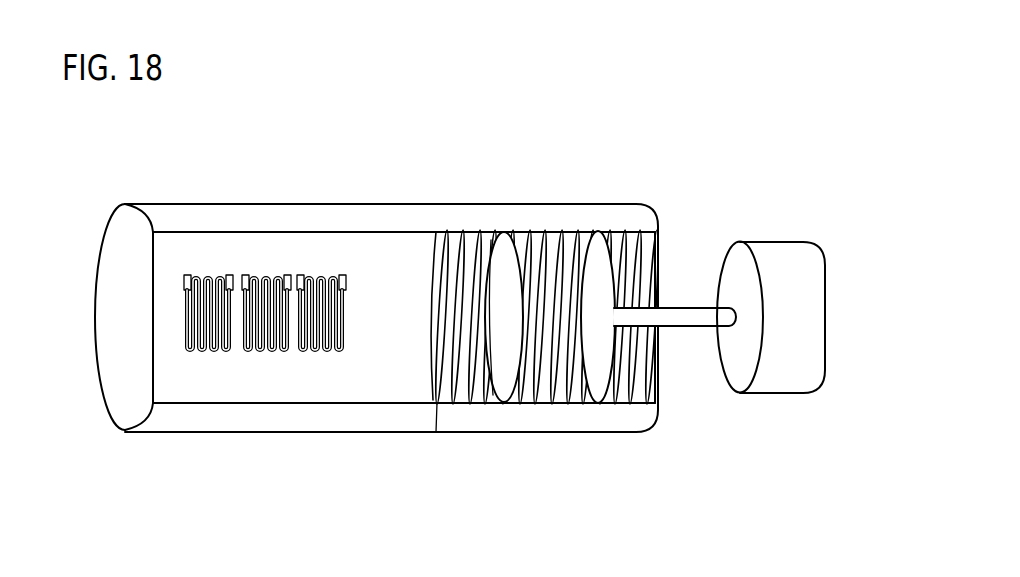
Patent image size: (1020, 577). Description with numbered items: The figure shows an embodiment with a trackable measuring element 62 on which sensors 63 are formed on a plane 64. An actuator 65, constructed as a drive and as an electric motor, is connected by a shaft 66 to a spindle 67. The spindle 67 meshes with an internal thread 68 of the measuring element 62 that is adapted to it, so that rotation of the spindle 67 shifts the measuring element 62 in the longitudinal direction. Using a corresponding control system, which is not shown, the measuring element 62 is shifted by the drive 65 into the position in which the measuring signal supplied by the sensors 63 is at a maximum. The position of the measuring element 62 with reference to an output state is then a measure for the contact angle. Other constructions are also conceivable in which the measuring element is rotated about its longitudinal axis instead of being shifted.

The measuring element 62 is at (460, 301).
The sensors 63 is at (207, 275).
The plane 64 is at (257, 393).
The actuator 65 is at (783, 383).
The shaft 66 is at (678, 314).
The spindle 67 is at (543, 378).
The internal thread 68 is at (460, 250).